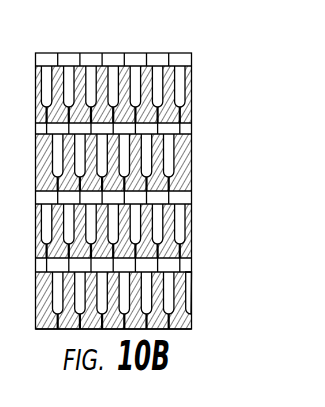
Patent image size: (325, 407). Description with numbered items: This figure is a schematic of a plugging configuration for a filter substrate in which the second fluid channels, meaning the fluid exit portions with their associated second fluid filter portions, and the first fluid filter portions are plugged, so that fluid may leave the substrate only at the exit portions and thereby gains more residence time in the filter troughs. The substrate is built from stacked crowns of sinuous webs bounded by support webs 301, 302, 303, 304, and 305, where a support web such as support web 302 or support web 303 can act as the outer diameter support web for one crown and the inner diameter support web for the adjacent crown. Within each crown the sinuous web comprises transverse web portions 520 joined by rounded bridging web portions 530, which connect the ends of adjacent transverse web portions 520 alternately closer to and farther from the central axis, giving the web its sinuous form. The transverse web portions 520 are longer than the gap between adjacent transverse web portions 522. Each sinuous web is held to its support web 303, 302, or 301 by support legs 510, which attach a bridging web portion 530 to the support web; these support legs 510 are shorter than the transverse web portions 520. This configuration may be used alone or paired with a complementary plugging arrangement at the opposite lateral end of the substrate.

The support web 301 is at (192, 327).
The support web 302 is at (190, 257).
The support web 303 is at (190, 193).
The support web 304 is at (191, 126).
The support web 305 is at (192, 57).
The support leg 510 is at (178, 122).
The transverse web portion 520 is at (181, 98).
The gap between adjacent transverse web portions 522 is at (135, 72).
The bridging web portion 530 is at (175, 77).